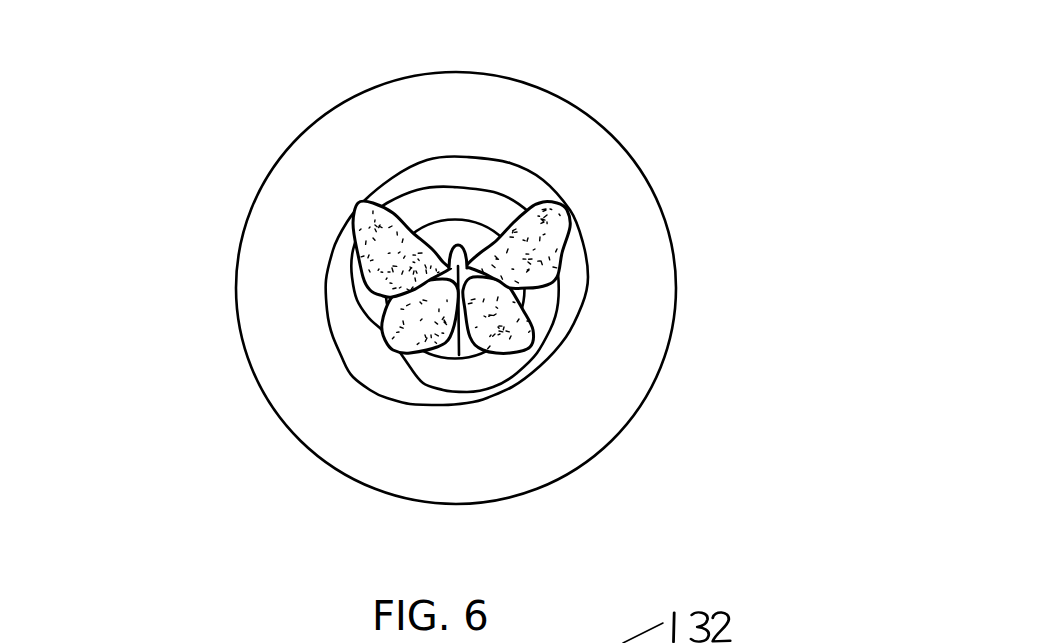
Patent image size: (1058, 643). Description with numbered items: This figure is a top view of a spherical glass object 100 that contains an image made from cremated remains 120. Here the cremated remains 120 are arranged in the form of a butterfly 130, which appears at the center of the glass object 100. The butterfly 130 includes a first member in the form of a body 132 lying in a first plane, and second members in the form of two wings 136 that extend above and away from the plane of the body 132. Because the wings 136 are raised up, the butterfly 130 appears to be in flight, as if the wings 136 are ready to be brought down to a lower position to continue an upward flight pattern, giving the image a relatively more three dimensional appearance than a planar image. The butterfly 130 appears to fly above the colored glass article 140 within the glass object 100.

The glass object 100 is at (463, 256).
The cremated remains 120 is at (575, 280).
The butterfly 130 is at (434, 271).
The body 132 is at (459, 355).
The wings 136 is at (434, 332).
The colored glass article 140 is at (581, 289).